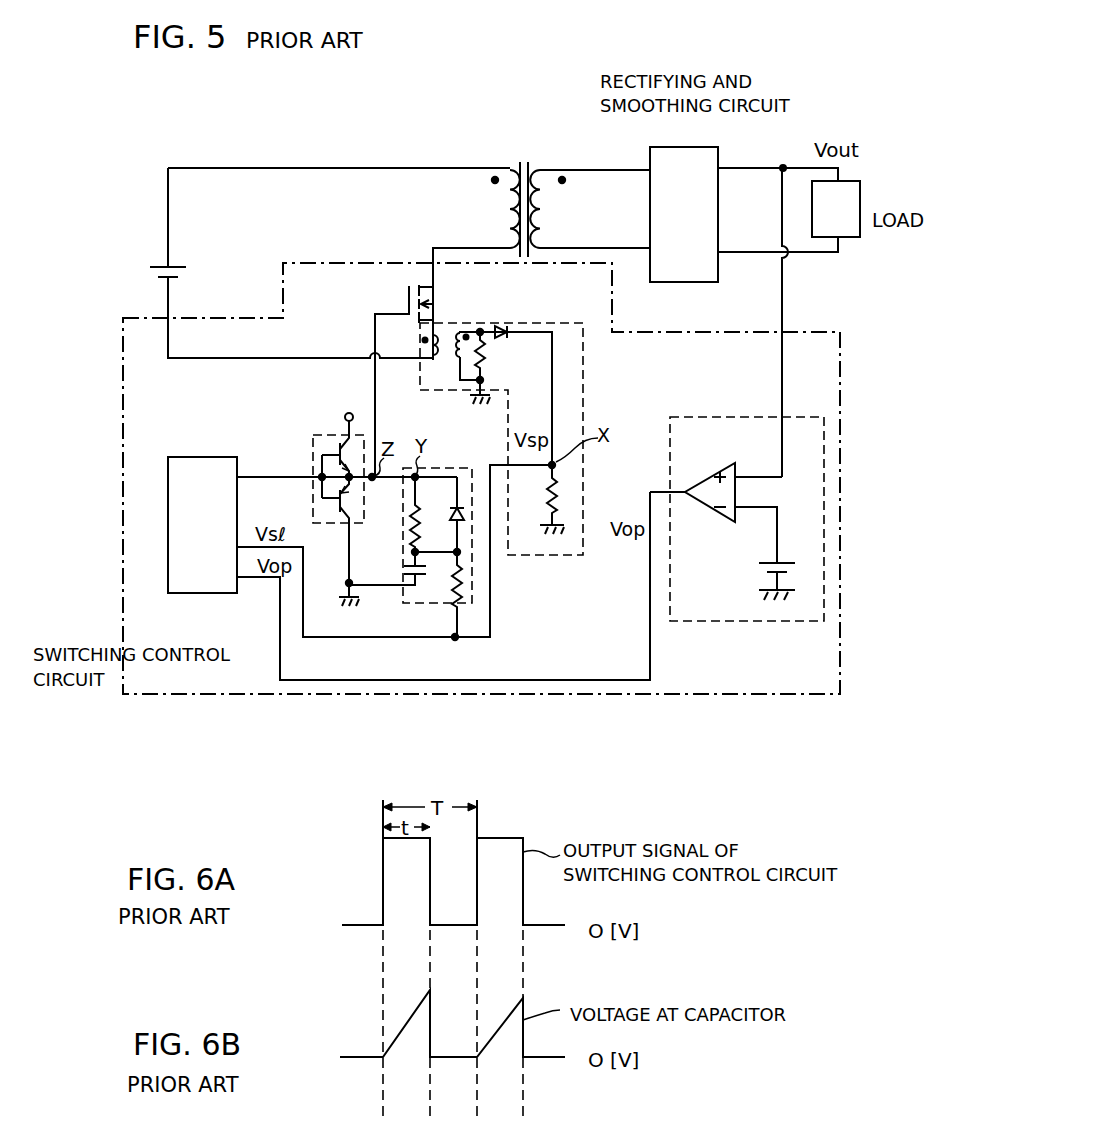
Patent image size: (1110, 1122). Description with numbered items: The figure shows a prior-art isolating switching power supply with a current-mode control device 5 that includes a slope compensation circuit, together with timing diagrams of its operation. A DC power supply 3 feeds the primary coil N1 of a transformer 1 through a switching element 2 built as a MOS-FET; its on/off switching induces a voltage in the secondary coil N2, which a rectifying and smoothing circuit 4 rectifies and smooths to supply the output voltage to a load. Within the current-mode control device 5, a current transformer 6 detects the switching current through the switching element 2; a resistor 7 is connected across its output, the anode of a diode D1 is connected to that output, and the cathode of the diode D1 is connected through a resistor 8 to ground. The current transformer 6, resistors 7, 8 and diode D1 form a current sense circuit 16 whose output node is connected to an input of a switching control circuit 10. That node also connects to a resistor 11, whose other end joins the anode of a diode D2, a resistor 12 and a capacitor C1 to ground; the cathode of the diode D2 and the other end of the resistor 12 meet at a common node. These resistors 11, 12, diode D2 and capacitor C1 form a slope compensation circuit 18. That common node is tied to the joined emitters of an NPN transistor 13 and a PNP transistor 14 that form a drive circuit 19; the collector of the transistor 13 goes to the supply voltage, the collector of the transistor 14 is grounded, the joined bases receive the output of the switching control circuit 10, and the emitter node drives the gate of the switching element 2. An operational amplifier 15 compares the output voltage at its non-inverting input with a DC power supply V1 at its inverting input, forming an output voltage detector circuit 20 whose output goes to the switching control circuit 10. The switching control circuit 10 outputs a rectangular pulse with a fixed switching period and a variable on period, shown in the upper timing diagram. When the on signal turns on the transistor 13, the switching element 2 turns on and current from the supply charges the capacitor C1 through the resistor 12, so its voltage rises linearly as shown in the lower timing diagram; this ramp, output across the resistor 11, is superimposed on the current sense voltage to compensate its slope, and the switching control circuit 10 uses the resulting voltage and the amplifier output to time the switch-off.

The transformer 1 is at (532, 168).
The switching element 2 is at (405, 300).
The DC power supply 3 is at (178, 266).
The rectifying and smoothing circuit 4 is at (714, 160).
The current-mode control device 5 is at (637, 331).
The current transformer 6 is at (455, 323).
The resistor 7 is at (484, 354).
The resistor 8 is at (565, 496).
The switching control circuit 10 is at (207, 595).
The resistor 11 is at (462, 590).
The resistor 12 is at (410, 514).
The NPN transistor 13 is at (352, 452).
The PNP transistor 14 is at (336, 516).
The operational amplifier 15 is at (722, 478).
The current sense circuit 16 is at (586, 389).
The slope compensation circuit 18 is at (453, 468).
The drive circuit 19 is at (316, 434).
The output voltage detector circuit 20 is at (758, 417).
The primary coil N1 is at (498, 212).
The secondary coil N2 is at (555, 214).
The diode D1 is at (505, 326).
The diode D2 is at (444, 516).
The capacitor C1 is at (397, 579).
The DC power supply V1 is at (776, 561).